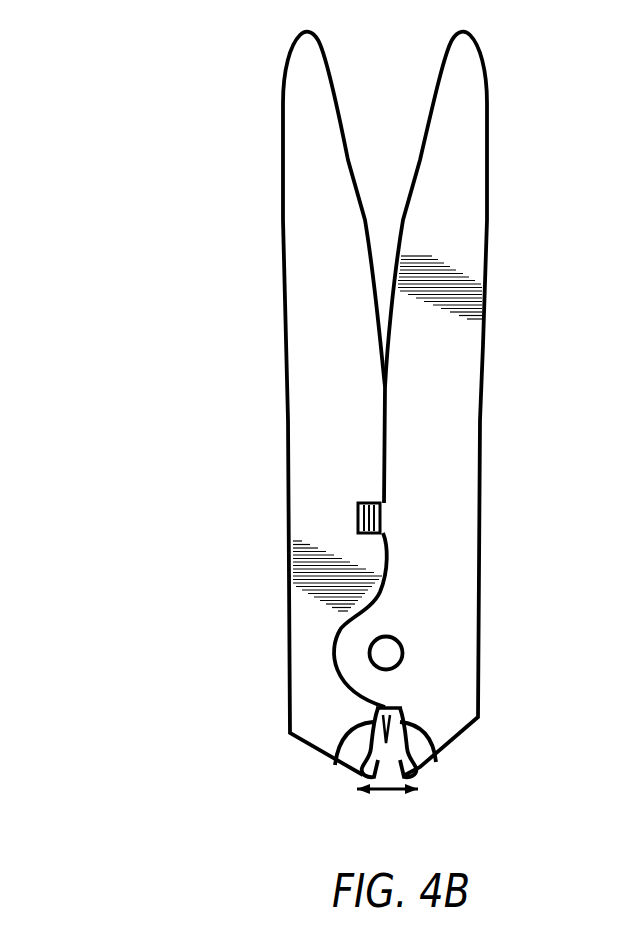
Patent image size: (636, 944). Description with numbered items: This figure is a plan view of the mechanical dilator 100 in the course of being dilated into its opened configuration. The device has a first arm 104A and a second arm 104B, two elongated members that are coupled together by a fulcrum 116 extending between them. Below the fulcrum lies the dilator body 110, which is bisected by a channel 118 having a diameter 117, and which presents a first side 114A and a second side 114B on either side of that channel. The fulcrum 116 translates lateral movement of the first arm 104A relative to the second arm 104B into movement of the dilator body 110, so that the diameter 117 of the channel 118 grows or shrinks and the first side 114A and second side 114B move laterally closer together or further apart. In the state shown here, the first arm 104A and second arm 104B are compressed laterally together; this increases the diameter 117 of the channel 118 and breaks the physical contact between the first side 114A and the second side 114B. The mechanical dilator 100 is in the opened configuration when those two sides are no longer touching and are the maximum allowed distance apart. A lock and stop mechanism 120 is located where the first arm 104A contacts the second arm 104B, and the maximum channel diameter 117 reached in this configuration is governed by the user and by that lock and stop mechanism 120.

The mechanical dilator 100 is at (254, 69).
The first arm 104A is at (313, 332).
The second arm 104B is at (443, 343).
The dilator body 110 is at (335, 750).
The first side 114A is at (345, 770).
The second side 114B is at (435, 758).
The fulcrum 116 is at (386, 653).
The diameter 117 is at (389, 792).
The channel 118 is at (400, 706).
The lock and stop mechanism 120 is at (352, 518).